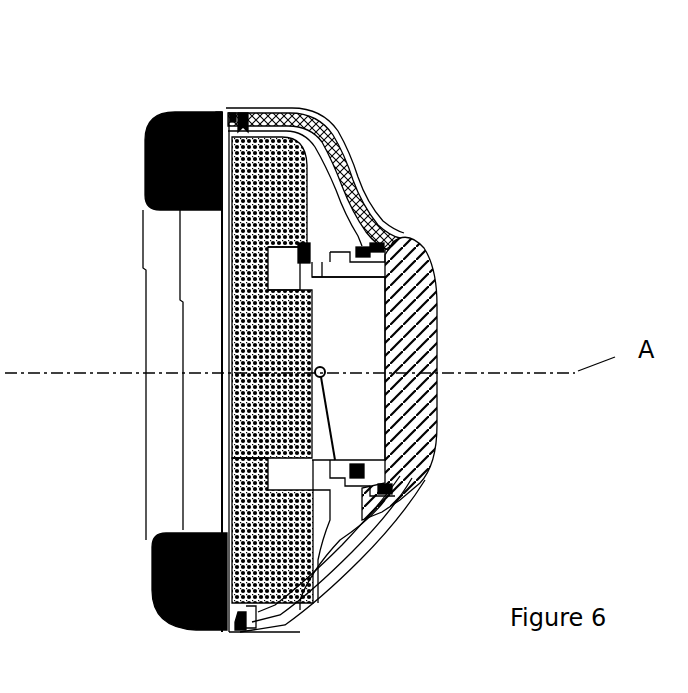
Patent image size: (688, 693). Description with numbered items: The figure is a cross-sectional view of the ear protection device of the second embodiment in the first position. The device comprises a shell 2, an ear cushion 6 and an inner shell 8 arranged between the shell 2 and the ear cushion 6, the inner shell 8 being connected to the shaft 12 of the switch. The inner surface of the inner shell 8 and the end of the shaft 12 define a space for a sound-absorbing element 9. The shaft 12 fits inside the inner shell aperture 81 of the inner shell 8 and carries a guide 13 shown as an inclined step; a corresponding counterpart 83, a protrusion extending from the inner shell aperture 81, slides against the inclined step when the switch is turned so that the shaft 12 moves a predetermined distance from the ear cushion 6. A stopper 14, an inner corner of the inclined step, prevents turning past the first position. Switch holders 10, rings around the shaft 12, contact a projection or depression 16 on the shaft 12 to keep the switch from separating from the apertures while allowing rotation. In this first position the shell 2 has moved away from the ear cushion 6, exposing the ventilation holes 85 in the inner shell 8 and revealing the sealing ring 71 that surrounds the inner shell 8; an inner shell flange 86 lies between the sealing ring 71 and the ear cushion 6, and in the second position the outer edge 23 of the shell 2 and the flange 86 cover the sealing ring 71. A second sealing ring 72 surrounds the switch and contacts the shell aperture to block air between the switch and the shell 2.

The shell 2 is at (313, 258).
The ear cushion 6 is at (165, 185).
The inner shell 8 is at (332, 530).
The sound-absorbing element 9 is at (300, 563).
The switch holders 10 is at (313, 252).
The shaft 12 is at (358, 337).
The guide 13 is at (337, 410).
The stopper 14 is at (332, 368).
The projection or depression 16 is at (333, 272).
The outer edge 23 is at (260, 110).
The sealing ring 71 is at (233, 110).
The second sealing ring 72 is at (397, 485).
The inner shell aperture 81 is at (301, 255).
The counterpart 83 is at (327, 365).
The ventilation holes 85 is at (243, 112).
The inner shell flange 86 is at (218, 110).